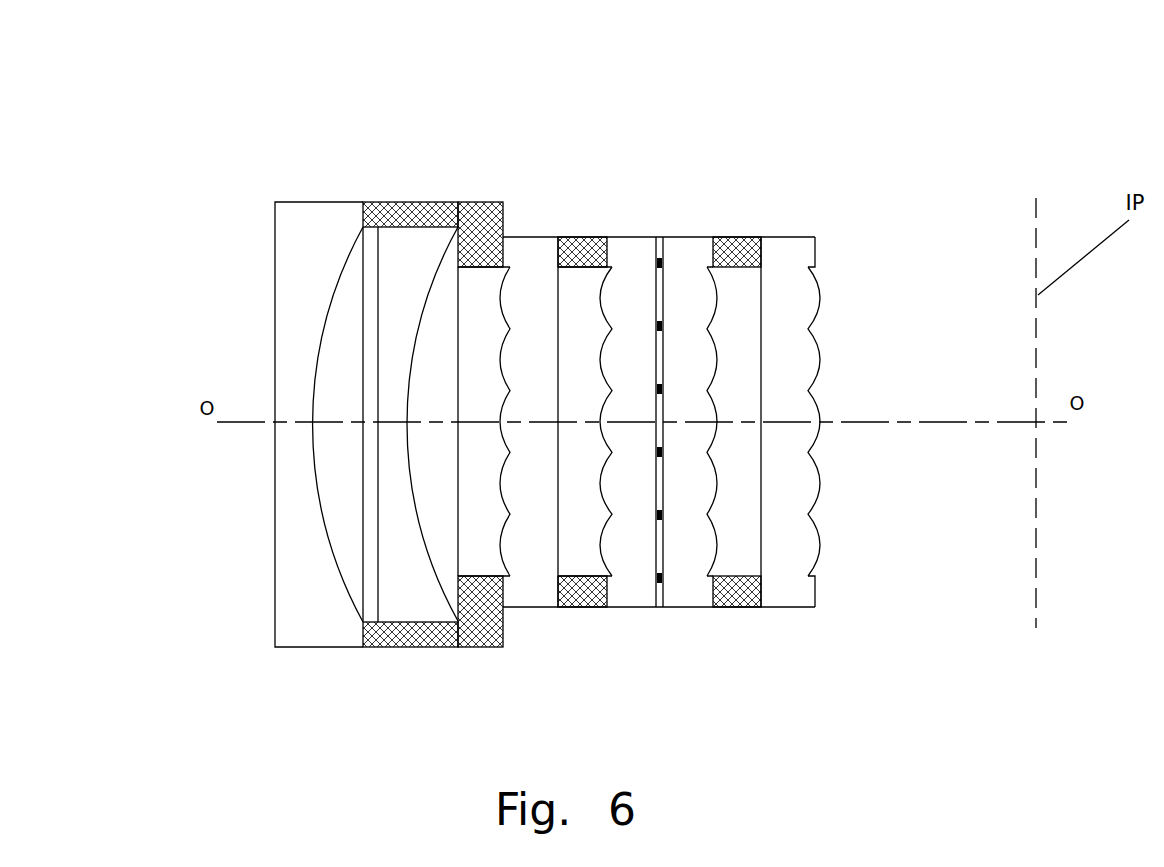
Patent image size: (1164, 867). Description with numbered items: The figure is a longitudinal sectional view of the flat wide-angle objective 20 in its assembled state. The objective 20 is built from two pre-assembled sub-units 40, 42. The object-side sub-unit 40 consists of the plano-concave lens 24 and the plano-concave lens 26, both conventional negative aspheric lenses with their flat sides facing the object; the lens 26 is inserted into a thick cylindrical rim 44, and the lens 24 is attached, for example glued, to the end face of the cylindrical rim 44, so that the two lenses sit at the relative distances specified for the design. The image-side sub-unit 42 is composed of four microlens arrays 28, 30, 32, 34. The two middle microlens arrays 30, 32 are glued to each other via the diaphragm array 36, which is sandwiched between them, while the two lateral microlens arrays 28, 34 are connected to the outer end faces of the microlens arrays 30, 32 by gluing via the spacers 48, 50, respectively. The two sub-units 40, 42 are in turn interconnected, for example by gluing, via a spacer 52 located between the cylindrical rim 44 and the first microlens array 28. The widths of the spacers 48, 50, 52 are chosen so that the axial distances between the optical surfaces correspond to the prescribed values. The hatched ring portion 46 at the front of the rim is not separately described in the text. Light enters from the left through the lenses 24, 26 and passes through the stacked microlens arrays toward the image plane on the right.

The objective 20 is at (603, 102).
The plano-concave lens 24 is at (317, 592).
The plano-concave lens 26 is at (405, 592).
The microlens array 28 is at (537, 243).
The microlens array 30 is at (628, 260).
The microlens array 32 is at (690, 588).
The microlens array 34 is at (802, 585).
The diaphragm array 36 is at (662, 238).
The sub-unit 40 is at (363, 178).
The sub-unit 42 is at (803, 190).
The cylindrical rim 44 is at (408, 640).
The upper retaining ring portion 46 is at (363, 212).
The spacer 48 is at (594, 603).
The spacer 50 is at (745, 607).
The spacer 52 is at (497, 647).